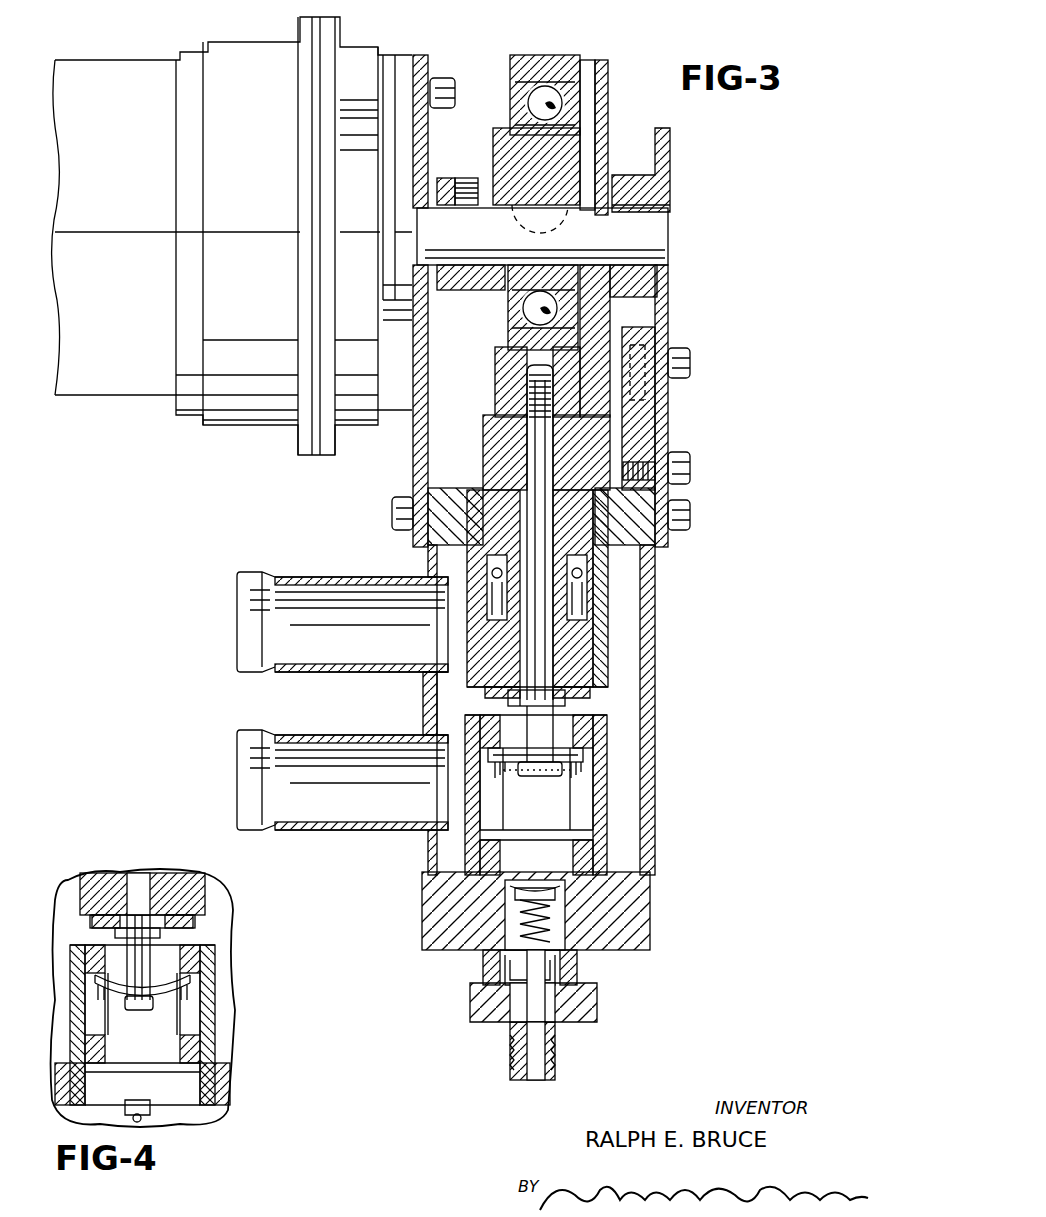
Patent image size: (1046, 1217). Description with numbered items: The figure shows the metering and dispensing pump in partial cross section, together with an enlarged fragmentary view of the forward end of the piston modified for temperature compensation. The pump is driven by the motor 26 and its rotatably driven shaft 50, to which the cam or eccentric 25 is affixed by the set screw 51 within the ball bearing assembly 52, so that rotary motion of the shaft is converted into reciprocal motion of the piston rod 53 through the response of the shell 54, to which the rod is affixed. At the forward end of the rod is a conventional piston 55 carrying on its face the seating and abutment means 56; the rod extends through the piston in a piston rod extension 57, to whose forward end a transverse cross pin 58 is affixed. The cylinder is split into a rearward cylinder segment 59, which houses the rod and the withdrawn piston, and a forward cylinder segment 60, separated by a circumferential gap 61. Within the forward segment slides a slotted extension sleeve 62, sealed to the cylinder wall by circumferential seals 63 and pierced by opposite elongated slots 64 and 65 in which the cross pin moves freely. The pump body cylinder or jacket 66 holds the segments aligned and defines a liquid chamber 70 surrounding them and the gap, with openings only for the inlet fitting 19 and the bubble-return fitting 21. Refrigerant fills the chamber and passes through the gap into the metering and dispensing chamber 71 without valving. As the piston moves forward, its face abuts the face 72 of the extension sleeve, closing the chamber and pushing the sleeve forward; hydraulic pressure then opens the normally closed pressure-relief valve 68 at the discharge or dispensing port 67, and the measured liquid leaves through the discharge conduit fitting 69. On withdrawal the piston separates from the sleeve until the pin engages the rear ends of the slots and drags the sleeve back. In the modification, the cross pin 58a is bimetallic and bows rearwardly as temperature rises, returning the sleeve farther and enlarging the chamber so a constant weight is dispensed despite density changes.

In FIG. 3, the motor 26 is at (130, 60).
In FIG. 3, the shaft 50 is at (668, 235).
In FIG. 3, the ball bearing assembly 52 is at (537, 70).
In FIG. 3, the shell 54 is at (605, 88).
In FIG. 3, the cam or eccentric 25 is at (575, 160).
In FIG. 3, the set screw 51 is at (462, 178).
In FIG. 3, the piston rod 53 is at (530, 446).
In FIG. 3, the pump body cylinder or jacket 66 is at (655, 590).
In FIG. 3, the chamber 70 is at (430, 695).
In FIG. 3, the face of extension sleeve 72 is at (448, 712).
In FIG. 3, the piston 55 is at (585, 648).
In FIG. 4, the piston 55 is at (85, 890).
In FIG. 3, the rearward cylinder segment 59 is at (608, 620).
In FIG. 3, the circumferential gap 61 is at (600, 694).
In FIG. 3, the seating and abutment means 56 is at (565, 700).
In FIG. 4, the seating and abutment means 56 is at (95, 928).
In FIG. 3, the forward cylinder segment 60 is at (607, 835).
In FIG. 3, the rings or circumferential seals 63 is at (595, 735).
In FIG. 3, the elongated slot 64 is at (600, 800).
In FIG. 3, the cross pin 58 is at (590, 760).
In FIG. 3, the piston rod extension 57 is at (541, 755).
In FIG. 4, the piston rod extension 57 is at (160, 932).
In FIG. 3, the metering and dispensing chamber 71 is at (565, 831).
In FIG. 3, the elongated slot 65 is at (480, 798).
In FIG. 3, the discharge or dispensing port 67 is at (470, 882).
In FIG. 3, the pressure-relief valve 68 is at (545, 895).
In FIG. 3, the slotted extension sleeve 62 is at (548, 905).
In FIG. 3, the discharge conduit fitting 69 is at (505, 1045).
In FIG. 3, the bubble-return fitting 21 is at (338, 585).
In FIG. 3, the inlet fitting 19 is at (336, 742).
In FIG. 4, the cross pin 58a is at (190, 990).